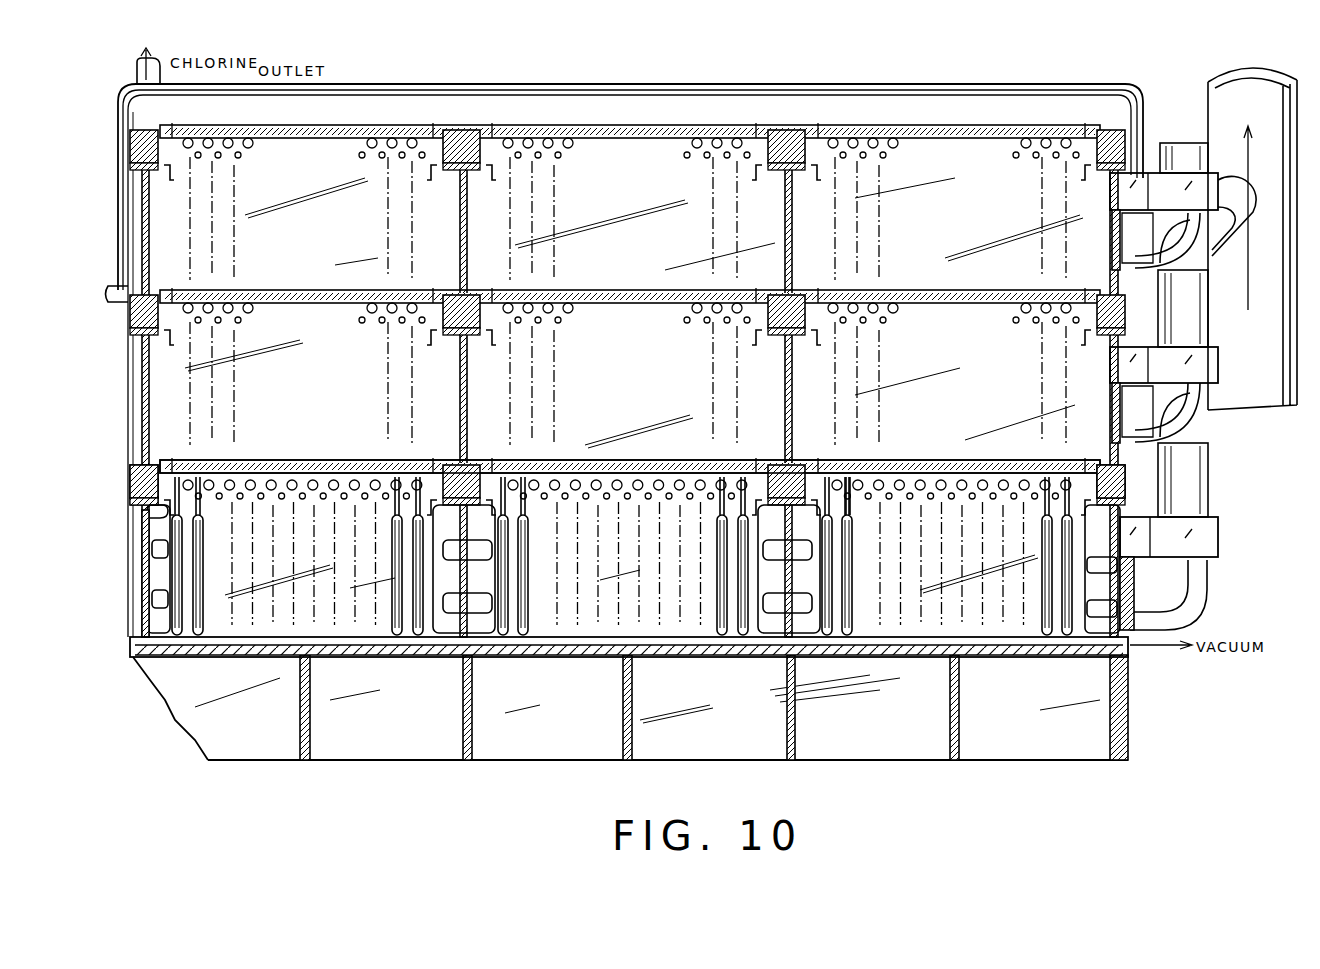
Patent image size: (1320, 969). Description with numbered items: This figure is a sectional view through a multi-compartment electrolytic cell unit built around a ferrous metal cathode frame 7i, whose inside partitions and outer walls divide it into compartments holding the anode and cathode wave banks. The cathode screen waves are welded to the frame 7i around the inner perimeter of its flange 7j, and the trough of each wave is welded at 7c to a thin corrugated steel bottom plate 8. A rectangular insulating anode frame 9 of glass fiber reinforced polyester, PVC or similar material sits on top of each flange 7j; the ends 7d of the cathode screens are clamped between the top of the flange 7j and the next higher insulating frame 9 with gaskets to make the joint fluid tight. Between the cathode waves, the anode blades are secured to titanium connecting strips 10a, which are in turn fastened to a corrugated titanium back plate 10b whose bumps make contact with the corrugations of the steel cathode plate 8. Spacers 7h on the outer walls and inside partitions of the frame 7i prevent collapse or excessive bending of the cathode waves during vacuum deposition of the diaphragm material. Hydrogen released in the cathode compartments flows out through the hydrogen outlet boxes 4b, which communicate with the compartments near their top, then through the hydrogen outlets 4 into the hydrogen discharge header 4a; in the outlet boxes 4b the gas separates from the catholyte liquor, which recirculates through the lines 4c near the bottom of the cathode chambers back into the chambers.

The hydrogen outlet 4 is at (1197, 296).
The hydrogen discharge header 4a is at (1264, 396).
The hydrogen outlet box 4b is at (1198, 200).
The recirculation line 4c is at (1198, 278).
The weld 7c is at (530, 642).
The cathode screen end 7d is at (162, 517).
The spacer 7h is at (452, 552).
The cathode frame 7i is at (142, 535).
The flange 7j is at (133, 505).
The bottom plate 8 is at (657, 640).
The insulating anode frame 9 is at (142, 483).
The connecting strip 10a is at (850, 498).
The back plate 10b is at (904, 477).